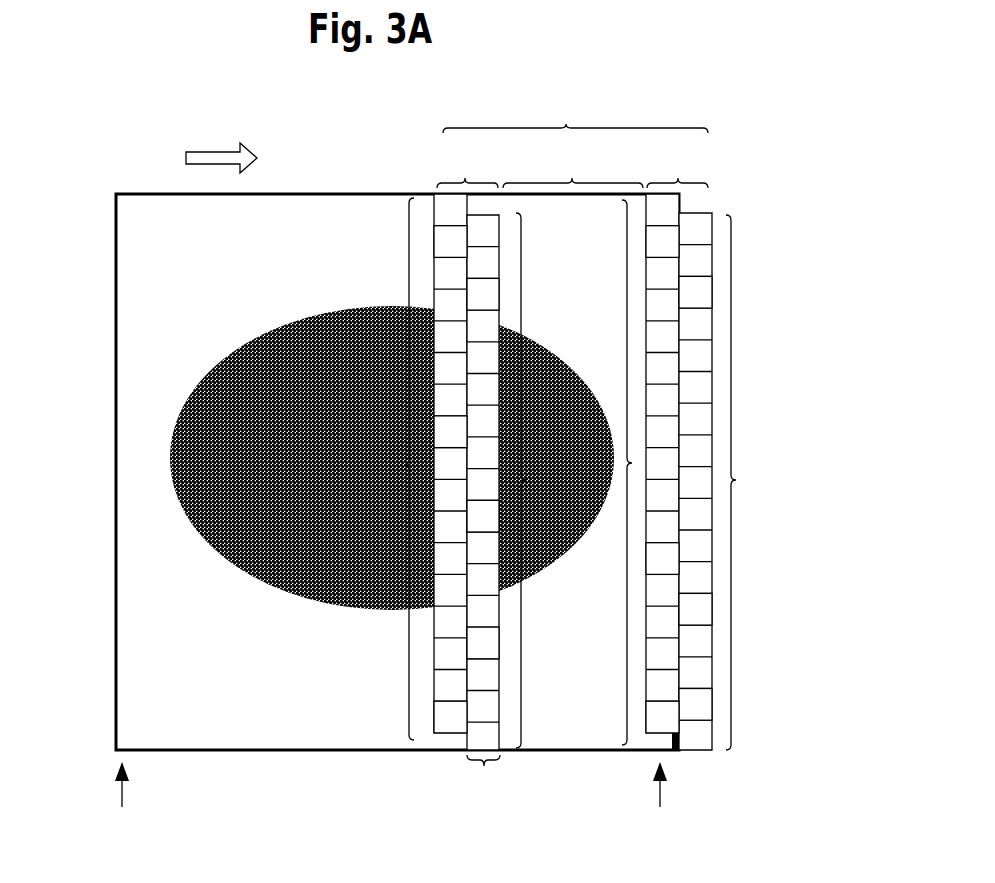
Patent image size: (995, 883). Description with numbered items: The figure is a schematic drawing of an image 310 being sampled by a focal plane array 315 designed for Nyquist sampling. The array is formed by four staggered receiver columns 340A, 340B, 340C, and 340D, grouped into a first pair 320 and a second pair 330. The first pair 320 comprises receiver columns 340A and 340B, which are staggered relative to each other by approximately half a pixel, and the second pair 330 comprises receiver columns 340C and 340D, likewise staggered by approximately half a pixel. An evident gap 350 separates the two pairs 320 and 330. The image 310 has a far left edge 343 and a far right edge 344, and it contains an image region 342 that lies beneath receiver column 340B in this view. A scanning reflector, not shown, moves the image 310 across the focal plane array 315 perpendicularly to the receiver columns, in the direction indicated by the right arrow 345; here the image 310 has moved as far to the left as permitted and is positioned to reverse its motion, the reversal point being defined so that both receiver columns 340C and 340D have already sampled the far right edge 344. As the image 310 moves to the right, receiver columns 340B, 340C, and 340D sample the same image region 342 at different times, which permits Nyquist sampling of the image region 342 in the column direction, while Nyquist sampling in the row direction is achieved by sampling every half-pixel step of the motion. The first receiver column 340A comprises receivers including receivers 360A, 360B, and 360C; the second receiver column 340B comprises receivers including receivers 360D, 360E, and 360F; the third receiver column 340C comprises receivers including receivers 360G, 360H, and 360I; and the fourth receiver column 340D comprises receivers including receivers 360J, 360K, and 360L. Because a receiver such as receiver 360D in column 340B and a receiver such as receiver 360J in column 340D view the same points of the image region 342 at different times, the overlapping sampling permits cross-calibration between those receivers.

The image 310 is at (120, 186).
The focal plane array 315 is at (575, 112).
The first pair of receiver columns 320 is at (466, 449).
The second pair of receiver columns 330 is at (679, 449).
The gap 350 is at (573, 168).
The first receiver column 340A is at (404, 465).
The second receiver column 340B is at (526, 480).
The third receiver column 340C is at (632, 463).
The fourth receiver column 340D is at (736, 480).
The image region 342 is at (482, 771).
The far left edge 343 is at (121, 799).
The far right edge 344 is at (659, 799).
The right arrow 345 is at (226, 147).
The receiver 360A is at (445, 241).
The receiver 360B is at (445, 428).
The receiver 360C is at (443, 709).
The receiver 360D is at (485, 291).
The receiver 360E is at (483, 505).
The receiver 360F is at (487, 656).
The receiver 360G is at (655, 241).
The receiver 360H is at (655, 552).
The receiver 360I is at (655, 715).
The receiver 360J is at (700, 292).
The receiver 360K is at (700, 607).
The receiver 360L is at (697, 700).